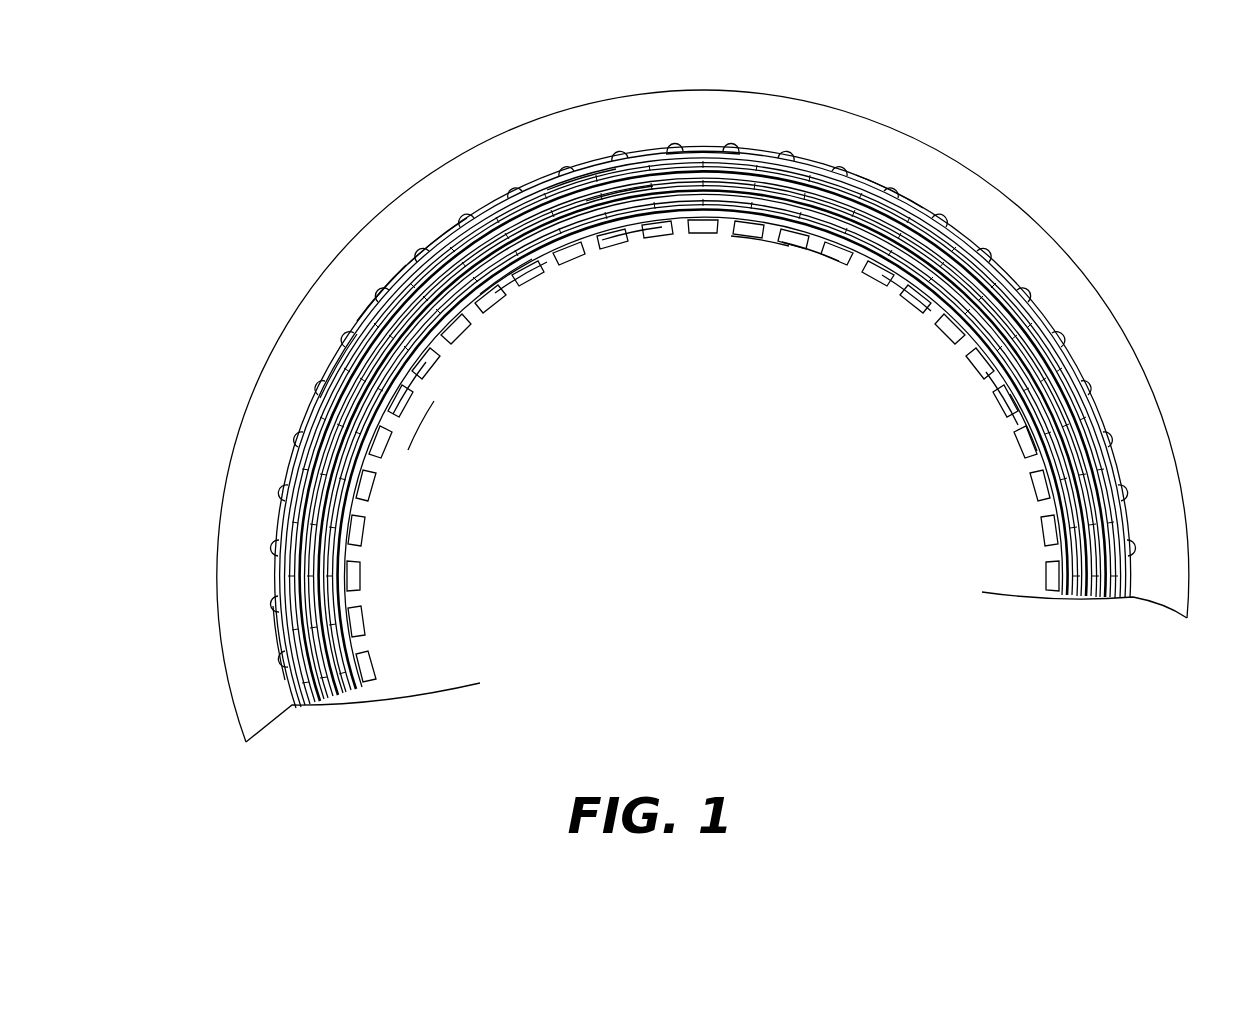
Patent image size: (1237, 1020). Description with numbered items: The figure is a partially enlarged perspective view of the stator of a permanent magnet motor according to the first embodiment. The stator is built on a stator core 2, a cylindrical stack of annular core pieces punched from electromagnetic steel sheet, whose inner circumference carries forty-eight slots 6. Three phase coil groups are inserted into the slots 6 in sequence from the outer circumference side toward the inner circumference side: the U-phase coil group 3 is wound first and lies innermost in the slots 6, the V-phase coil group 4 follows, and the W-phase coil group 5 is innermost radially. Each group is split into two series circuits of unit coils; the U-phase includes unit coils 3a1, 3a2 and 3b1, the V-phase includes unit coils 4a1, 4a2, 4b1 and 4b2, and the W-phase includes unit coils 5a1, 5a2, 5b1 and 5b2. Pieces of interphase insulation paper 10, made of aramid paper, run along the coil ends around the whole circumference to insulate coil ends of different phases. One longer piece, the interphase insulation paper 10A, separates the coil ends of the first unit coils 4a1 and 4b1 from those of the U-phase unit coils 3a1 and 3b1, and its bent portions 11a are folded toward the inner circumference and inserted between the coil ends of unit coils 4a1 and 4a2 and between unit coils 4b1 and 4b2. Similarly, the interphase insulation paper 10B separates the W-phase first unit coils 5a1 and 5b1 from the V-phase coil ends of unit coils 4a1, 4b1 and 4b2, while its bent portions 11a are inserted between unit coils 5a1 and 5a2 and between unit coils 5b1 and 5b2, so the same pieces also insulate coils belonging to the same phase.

The stator core 2 is at (750, 112).
The U-phase coil group 3 is at (806, 118).
The V-phase coil group 4 is at (1040, 325).
The W-phase coil group 5 is at (1043, 513).
The slots 6 is at (703, 152).
The interphase insulation paper 10 is at (1003, 285).
The interphase insulation paper 10A is at (380, 292).
The interphase insulation paper 10B is at (632, 232).
The bent portions 11a is at (890, 190).
The first unit coil 3a1 is at (337, 365).
The second unit coil 3a2 is at (277, 643).
The first unit coil 3b1 is at (437, 240).
The first unit coil 4a1 is at (581, 178).
The second unit coil 4a2 is at (420, 425).
The first unit coil 4b1 is at (619, 192).
The second unit coil 4b2 is at (907, 292).
The first unit coil 5a1 is at (760, 240).
The second unit coil 5a2 is at (505, 275).
The first unit coil 5b1 is at (811, 250).
The second unit coil 5b2 is at (1025, 422).